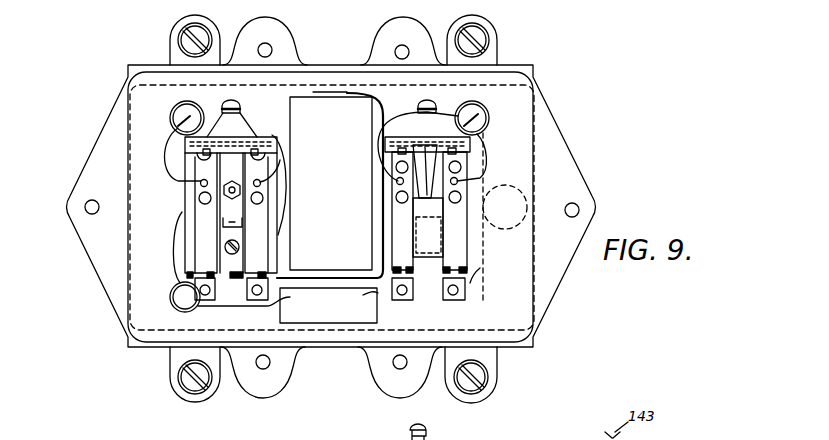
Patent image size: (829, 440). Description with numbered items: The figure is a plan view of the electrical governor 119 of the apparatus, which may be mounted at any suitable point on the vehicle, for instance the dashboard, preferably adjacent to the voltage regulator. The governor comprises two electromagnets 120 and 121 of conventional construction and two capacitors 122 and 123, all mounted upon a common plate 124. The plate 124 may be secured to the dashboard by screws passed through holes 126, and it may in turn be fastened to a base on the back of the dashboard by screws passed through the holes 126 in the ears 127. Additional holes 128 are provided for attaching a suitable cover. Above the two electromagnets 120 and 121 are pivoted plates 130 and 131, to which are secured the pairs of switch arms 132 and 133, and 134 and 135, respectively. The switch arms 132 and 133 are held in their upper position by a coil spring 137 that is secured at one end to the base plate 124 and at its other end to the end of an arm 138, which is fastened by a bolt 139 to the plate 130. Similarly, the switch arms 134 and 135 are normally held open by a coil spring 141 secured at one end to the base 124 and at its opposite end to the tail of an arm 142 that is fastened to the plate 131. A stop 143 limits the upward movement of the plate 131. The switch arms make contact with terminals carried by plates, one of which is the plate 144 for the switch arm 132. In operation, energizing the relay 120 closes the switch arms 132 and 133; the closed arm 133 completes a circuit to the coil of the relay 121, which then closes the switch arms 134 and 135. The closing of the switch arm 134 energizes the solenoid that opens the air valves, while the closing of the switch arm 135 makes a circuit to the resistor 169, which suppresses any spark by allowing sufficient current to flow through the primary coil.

The governor 119 is at (123, 332).
The electromagnet 120 is at (187, 210).
The electromagnet 121 is at (482, 187).
The capacitor 122 is at (522, 218).
The capacitor 123 is at (331, 181).
The plate 124 is at (558, 172).
The holes 126 is at (266, 50).
The ears 127 is at (376, 48).
The holes 128 is at (575, 205).
The pivoted plate 130 is at (262, 182).
The pivoted plate 131 is at (387, 202).
The switch arm 132 is at (203, 248).
The switch arm 133 is at (260, 253).
The switch arm 134 is at (402, 247).
The switch arm 135 is at (457, 248).
The coil spring 137 is at (242, 108).
The arm 138 is at (237, 128).
The bolt 139 is at (201, 182).
The coil spring 141 is at (433, 108).
The arm 142 is at (445, 134).
The stop 143 is at (387, 138).
The plate 144 is at (180, 290).
The resistor 169 is at (368, 310).